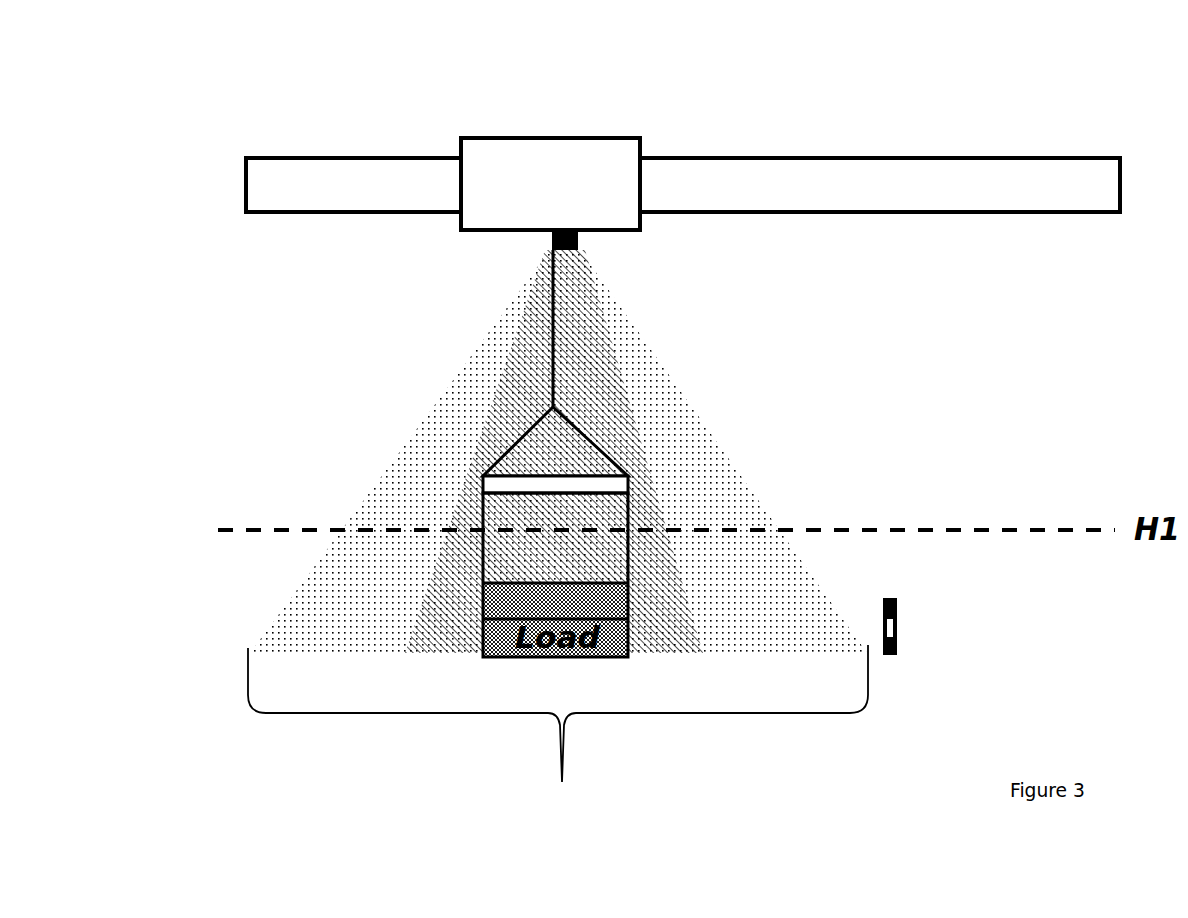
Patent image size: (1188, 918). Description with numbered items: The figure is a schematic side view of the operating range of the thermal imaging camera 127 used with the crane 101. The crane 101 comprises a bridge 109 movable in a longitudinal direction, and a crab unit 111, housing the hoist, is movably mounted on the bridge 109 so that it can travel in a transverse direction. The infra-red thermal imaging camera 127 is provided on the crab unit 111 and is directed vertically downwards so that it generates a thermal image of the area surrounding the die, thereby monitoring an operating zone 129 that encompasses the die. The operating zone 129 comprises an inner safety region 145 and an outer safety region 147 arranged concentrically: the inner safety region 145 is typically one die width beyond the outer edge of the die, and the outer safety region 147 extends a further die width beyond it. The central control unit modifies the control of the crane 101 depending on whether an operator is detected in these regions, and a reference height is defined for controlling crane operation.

The crane 101 is at (1032, 102).
The bridge 109 is at (820, 162).
The crab unit 111 is at (618, 152).
The thermal imaging camera 127 is at (578, 250).
The operating zone 129 is at (750, 718).
The inner safety region 145 is at (440, 640).
The outer safety region 147 is at (360, 645).